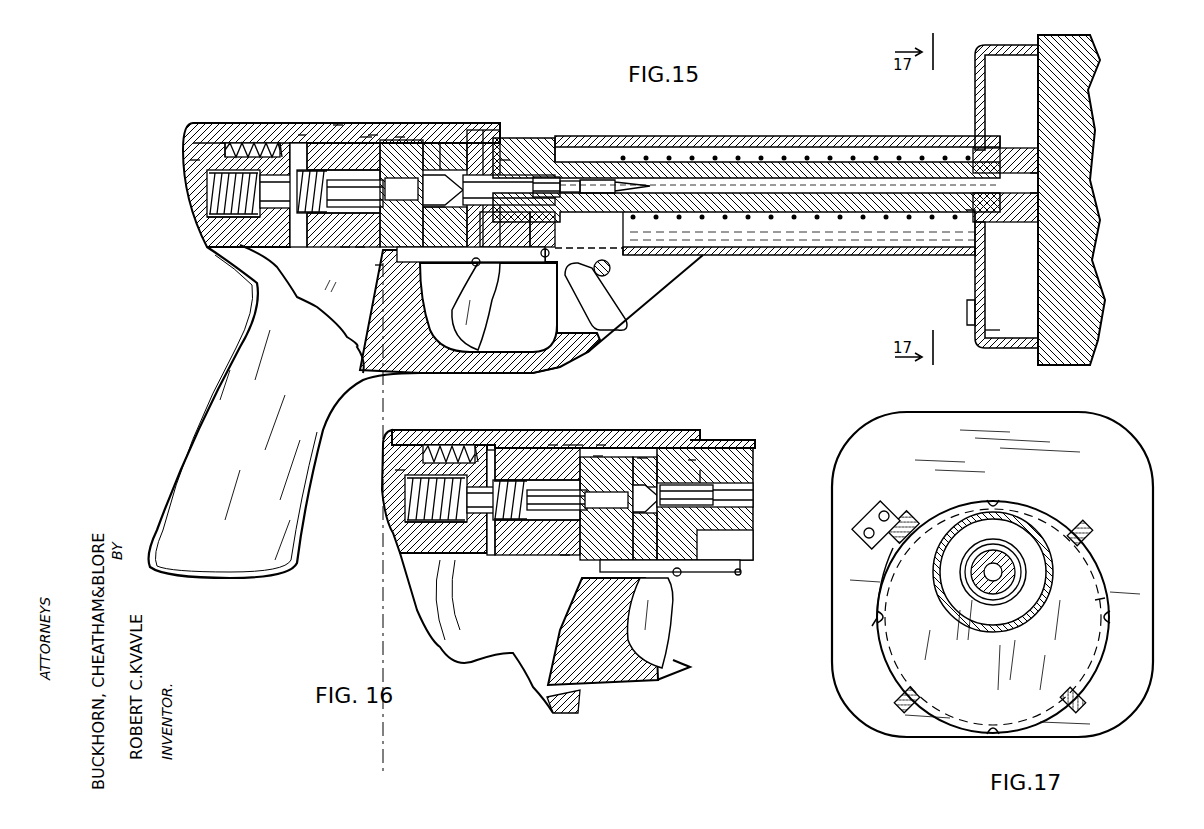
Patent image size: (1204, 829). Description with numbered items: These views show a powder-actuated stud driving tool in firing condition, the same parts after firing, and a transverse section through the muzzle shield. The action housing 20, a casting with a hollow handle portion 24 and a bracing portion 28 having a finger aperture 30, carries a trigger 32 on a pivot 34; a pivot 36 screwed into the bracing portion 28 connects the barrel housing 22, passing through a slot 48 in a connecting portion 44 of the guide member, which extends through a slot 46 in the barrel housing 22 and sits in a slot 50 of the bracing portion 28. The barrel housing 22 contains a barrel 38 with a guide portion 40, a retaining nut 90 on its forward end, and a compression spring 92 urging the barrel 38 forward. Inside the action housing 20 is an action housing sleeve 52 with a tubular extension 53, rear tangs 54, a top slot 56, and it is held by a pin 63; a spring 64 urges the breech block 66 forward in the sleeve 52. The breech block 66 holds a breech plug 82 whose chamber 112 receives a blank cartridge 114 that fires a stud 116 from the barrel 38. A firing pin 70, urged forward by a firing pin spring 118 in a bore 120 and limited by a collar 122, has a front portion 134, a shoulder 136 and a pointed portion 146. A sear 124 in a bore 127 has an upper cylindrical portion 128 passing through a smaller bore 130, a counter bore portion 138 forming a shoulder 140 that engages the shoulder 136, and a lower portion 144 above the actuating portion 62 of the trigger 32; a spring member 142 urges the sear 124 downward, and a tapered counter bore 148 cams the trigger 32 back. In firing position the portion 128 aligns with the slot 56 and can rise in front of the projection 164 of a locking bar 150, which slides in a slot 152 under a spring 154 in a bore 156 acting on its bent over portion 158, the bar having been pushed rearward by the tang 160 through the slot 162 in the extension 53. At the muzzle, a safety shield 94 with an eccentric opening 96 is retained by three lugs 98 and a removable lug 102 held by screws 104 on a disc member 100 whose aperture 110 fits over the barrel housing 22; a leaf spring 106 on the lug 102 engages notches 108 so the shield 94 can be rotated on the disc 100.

In FIG. 15, the action housing 20 is at (289, 122).
In FIG. 16, the action housing 20 is at (450, 420).
In FIG. 15, the barrel housing 22 is at (804, 139).
In FIG. 16, the barrel housing 22 is at (764, 448).
In FIG. 17, the barrel housing 22 is at (1039, 626).
In FIG. 15, the handle portion 24 is at (218, 395).
In FIG. 16, the handle portion 24 is at (500, 658).
In FIG. 15, the bracing portion 28 is at (598, 348).
In FIG. 16, the bracing portion 28 is at (603, 631).
In FIG. 15, the finger aperture 30 is at (543, 336).
In FIG. 15, the trigger 32 is at (462, 322).
In FIG. 16, the trigger 32 is at (662, 645).
In FIG. 15, the pivot 34 is at (478, 290).
In FIG. 16, the pivot 34 is at (680, 579).
In FIG. 15, the pivot 36 is at (611, 273).
In FIG. 15, the barrel 38 is at (744, 166).
In FIG. 16, the barrel 38 is at (754, 515).
In FIG. 15, the guide portion 40 is at (533, 222).
In FIG. 16, the guide portion 40 is at (754, 540).
In FIG. 15, the connecting portion 44 is at (653, 290).
In FIG. 15, the slot 46 is at (546, 262).
In FIG. 15, the slot 48 is at (606, 325).
In FIG. 15, the slot 50 is at (580, 346).
In FIG. 15, the action housing sleeve 52 is at (297, 250).
In FIG. 16, the action housing sleeve 52 is at (498, 557).
In FIG. 15, the tubular extension 53 is at (517, 255).
In FIG. 16, the tubular extension 53 is at (743, 567).
In FIG. 15, the tangs 54 is at (297, 144).
In FIG. 16, the tangs 54 is at (493, 450).
In FIG. 15, the slot 56 is at (365, 137).
In FIG. 16, the slot 56 is at (578, 445).
In FIG. 15, the actuating portion 62 is at (382, 266).
In FIG. 15, the pin 63 is at (552, 249).
In FIG. 15, the spring 64 is at (336, 178).
In FIG. 16, the spring 64 is at (537, 471).
In FIG. 15, the breech block 66 is at (338, 125).
In FIG. 16, the breech block 66 is at (553, 445).
In FIG. 15, the firing pin 70 is at (322, 191).
In FIG. 16, the firing pin 70 is at (520, 500).
In FIG. 15, the breech plug 82 is at (503, 166).
In FIG. 16, the breech plug 82 is at (690, 460).
In FIG. 15, the retaining nut 90 is at (1035, 165).
In FIG. 15, the compression spring 92 is at (760, 223).
In FIG. 17, the compression spring 92 is at (1005, 598).
In FIG. 15, the safety shield 94 is at (1025, 349).
In FIG. 17, the safety shield 94 is at (1145, 452).
In FIG. 15, the opening 96 is at (988, 326).
In FIG. 17, the opening 96 is at (1105, 597).
In FIG. 15, the lugs 98 is at (967, 319).
In FIG. 17, the lugs 98 is at (1083, 525).
In FIG. 15, the disc member 100 is at (975, 284).
In FIG. 17, the disc member 100 is at (1077, 669).
In FIG. 17, the removable lug 102 is at (927, 520).
In FIG. 17, the screws 104 is at (877, 517).
In FIG. 17, the leaf spring 106 is at (875, 565).
In FIG. 17, the notches 108 is at (994, 501).
In FIG. 15, the aperture 110 is at (960, 257).
In FIG. 17, the aperture 110 is at (1053, 573).
In FIG. 15, the chamber 112 is at (511, 180).
In FIG. 16, the chamber 112 is at (701, 470).
In FIG. 15, the blank cartridge 114 is at (505, 206).
In FIG. 16, the blank cartridge 114 is at (745, 495).
In FIG. 15, the stud 116 is at (580, 183).
In FIG. 15, the firing pin spring 118 is at (208, 184).
In FIG. 16, the firing pin spring 118 is at (410, 511).
In FIG. 15, the bore 120 is at (207, 221).
In FIG. 16, the bore 120 is at (405, 516).
In FIG. 15, the collar 122 is at (278, 191).
In FIG. 16, the collar 122 is at (470, 526).
In FIG. 15, the sear 124 is at (441, 225).
In FIG. 16, the sear 124 is at (622, 486).
In FIG. 15, the bore 127 is at (358, 250).
In FIG. 16, the bore 127 is at (541, 534).
In FIG. 15, the cylindrical portion 128 is at (398, 136).
In FIG. 16, the cylindrical portion 128 is at (598, 456).
In FIG. 15, the bore 130 is at (426, 143).
In FIG. 15, the front portion 134 is at (401, 193).
In FIG. 16, the front portion 134 is at (606, 508).
In FIG. 15, the shoulder 136 is at (355, 193).
In FIG. 16, the shoulder 136 is at (557, 499).
In FIG. 15, the counter bore portion 138 is at (343, 224).
In FIG. 15, the shoulder 140 is at (430, 208).
In FIG. 16, the shoulder 140 is at (582, 485).
In FIG. 15, the spring member 142 is at (442, 143).
In FIG. 16, the spring member 142 is at (641, 458).
In FIG. 15, the lower portion 144 is at (402, 254).
In FIG. 16, the lower portion 144 is at (619, 565).
In FIG. 15, the pointed portion 146 is at (431, 185).
In FIG. 16, the pointed portion 146 is at (620, 512).
In FIG. 15, the tapered counter bore 148 is at (345, 250).
In FIG. 16, the tapered counter bore 148 is at (565, 559).
In FIG. 15, the locking bar 150 is at (303, 135).
In FIG. 16, the locking bar 150 is at (601, 445).
In FIG. 15, the slot 152 is at (258, 141).
In FIG. 15, the spring 154 is at (232, 126).
In FIG. 16, the spring 154 is at (432, 445).
In FIG. 15, the bore 156 is at (224, 157).
In FIG. 16, the bore 156 is at (422, 461).
In FIG. 15, the bent over portion 158 is at (276, 140).
In FIG. 16, the bent over portion 158 is at (481, 445).
In FIG. 15, the tang 160 is at (486, 130).
In FIG. 15, the slot 162 is at (500, 135).
In FIG. 15, the projection 164 is at (372, 135).
In FIG. 16, the projection 164 is at (568, 445).